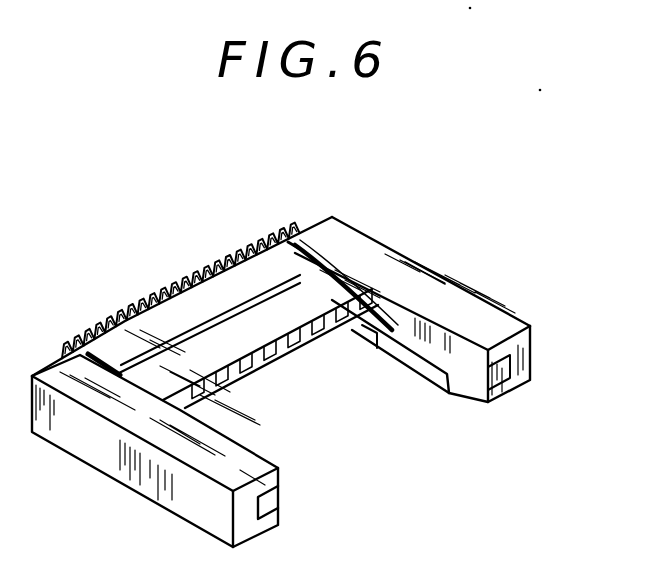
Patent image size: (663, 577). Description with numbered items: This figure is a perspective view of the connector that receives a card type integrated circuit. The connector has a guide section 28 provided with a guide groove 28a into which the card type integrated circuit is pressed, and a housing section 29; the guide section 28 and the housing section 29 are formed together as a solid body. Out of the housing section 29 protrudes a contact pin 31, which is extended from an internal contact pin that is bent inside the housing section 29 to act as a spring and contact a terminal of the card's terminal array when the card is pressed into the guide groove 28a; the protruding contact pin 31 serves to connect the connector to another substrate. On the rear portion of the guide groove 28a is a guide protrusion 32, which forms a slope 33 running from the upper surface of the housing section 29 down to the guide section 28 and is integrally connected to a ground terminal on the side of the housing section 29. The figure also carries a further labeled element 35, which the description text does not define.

The guide section 28 is at (460, 378).
The guide groove 28a is at (506, 384).
The housing section 29 is at (330, 287).
The contact pin 31 is at (93, 323).
The guide protrusion 32 is at (422, 270).
The slope 33 is at (378, 347).
The spring member 35 is at (303, 244).